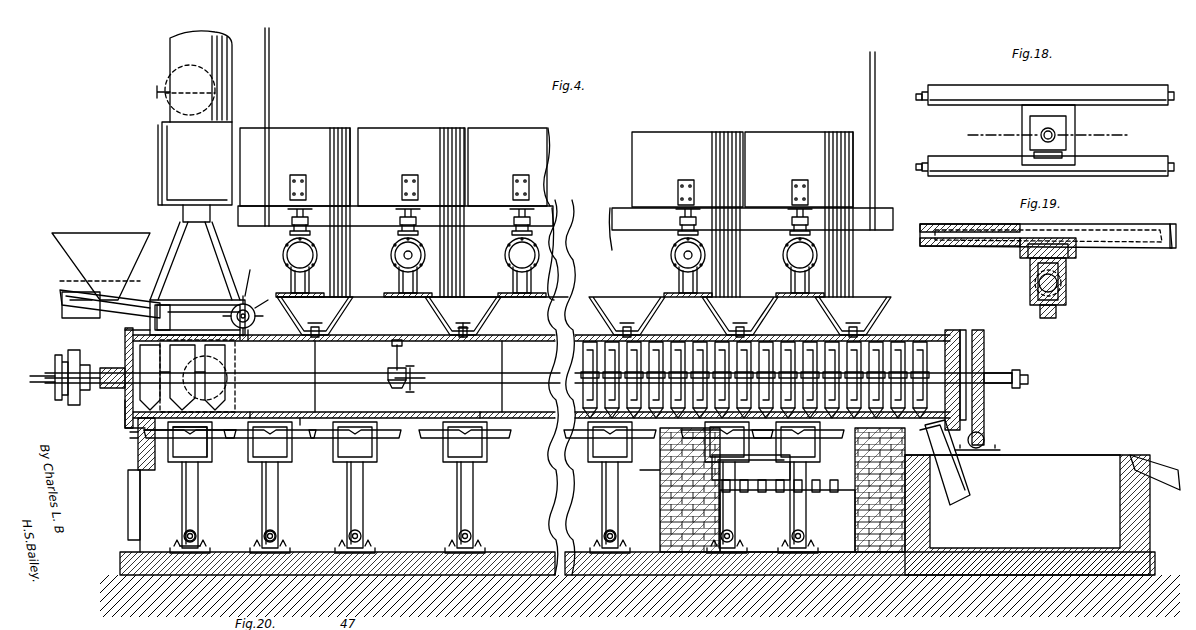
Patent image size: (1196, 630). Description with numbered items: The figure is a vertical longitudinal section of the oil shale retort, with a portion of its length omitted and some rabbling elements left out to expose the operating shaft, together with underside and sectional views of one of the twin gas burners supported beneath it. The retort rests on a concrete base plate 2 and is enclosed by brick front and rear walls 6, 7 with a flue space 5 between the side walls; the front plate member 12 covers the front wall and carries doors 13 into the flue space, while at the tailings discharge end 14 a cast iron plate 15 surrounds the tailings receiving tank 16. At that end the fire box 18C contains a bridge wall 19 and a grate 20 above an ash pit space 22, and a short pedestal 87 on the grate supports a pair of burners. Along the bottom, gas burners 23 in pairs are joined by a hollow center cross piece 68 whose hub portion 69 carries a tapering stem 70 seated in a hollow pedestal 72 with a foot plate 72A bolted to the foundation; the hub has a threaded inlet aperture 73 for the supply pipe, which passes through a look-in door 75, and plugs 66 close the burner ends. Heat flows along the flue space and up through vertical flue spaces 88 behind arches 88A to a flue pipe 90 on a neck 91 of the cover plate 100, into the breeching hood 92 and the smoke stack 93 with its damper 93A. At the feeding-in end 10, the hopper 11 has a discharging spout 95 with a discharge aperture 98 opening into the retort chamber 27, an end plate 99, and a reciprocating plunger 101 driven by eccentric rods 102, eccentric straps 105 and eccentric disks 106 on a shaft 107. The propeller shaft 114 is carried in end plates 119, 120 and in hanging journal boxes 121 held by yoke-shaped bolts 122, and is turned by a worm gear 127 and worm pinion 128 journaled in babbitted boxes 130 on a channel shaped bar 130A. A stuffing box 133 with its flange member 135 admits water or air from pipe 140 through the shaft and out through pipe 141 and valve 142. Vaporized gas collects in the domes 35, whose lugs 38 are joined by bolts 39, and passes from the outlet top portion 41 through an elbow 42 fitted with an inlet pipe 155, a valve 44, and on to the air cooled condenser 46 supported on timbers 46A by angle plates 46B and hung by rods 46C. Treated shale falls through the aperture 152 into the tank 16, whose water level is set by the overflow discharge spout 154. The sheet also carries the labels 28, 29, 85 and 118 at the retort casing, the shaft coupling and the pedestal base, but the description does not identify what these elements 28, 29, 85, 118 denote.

In FIG. 4, the foundation or base plate 2 is at (498, 560).
In FIG. 4, the flue space 5 is at (311, 458).
In FIG. 4, the front wall 6 is at (128, 434).
In FIG. 4, the rear wall 7 is at (855, 536).
In FIG. 18, the rear wall 7 is at (1040, 138).
In FIG. 4, the oil shale feeding-in end 10 is at (109, 336).
In FIG. 4, the oil shale receiving hopper 11 is at (101, 266).
In FIG. 4, the front plate member 12 is at (138, 462).
In FIG. 4, the doors 13 is at (128, 492).
In FIG. 4, the tailings discharge end 14 is at (766, 362).
In FIG. 4, the cast iron plate 15 is at (944, 334).
In FIG. 4, the tailings receiving tank 16 is at (1032, 500).
In FIG. 4, the fire box 18C is at (753, 478).
In FIG. 18, the bridge wall 19 is at (1049, 136).
In FIG. 4, the grate 20 is at (740, 520).
In FIG. 4, the ash pit space 22 is at (787, 521).
In FIG. 4, the gas burners 23 is at (208, 438).
In FIG. 18, the gas burners 23 is at (1102, 92).
In FIG. 19, the gas burners 23 is at (1104, 250).
In FIG. 4, the shale treating retort chamber 27 is at (470, 406).
In FIG. 4, the compartment 28 is at (278, 416).
In FIG. 4, the partition 29 is at (399, 376).
In FIG. 4, the vaporized gas domes 35 is at (584, 317).
In FIG. 4, the lugs 38 is at (627, 330).
In FIG. 4, the bolts 39 is at (468, 330).
In FIG. 4, the flanged outlet top portion 41 is at (386, 296).
In FIG. 4, the elbow 42 is at (520, 280).
In FIG. 4, the valve 44 is at (418, 226).
In FIG. 4, the air cooled condenser 46 is at (392, 126).
In FIG. 4, the timbers 46A is at (615, 214).
In FIG. 4, the angle plates 46B is at (400, 192).
In FIG. 4, the rods 46C is at (268, 82).
In FIG. 18, the plugs 66 is at (916, 98).
In FIG. 19, the plugs 66 is at (1176, 248).
In FIG. 18, the center cross piece 68 is at (1022, 122).
In FIG. 19, the center cross piece 68 is at (1020, 250).
In FIG. 18, the depending hollow hub portion 69 is at (1070, 128).
In FIG. 19, the depending hollow hub portion 69 is at (1030, 283).
In FIG. 19, the tapering stem 70 is at (1042, 318).
In FIG. 4, the hollow pedestal 72 is at (198, 490).
In FIG. 4, the foot plate 72A is at (245, 544).
In FIG. 19, the threaded inlet aperture 73 is at (1060, 284).
In FIG. 4, the look-in door 75 is at (212, 456).
In FIG. 4, the pivot 85 is at (183, 534).
In FIG. 4, the short pedestal 87 is at (712, 500).
In FIG. 4, the vertical flue spaces 88 is at (238, 342).
In FIG. 4, the arches 88A is at (214, 384).
In FIG. 4, the flue pipe 90 is at (195, 261).
In FIG. 4, the necks 91 is at (188, 300).
In FIG. 4, the smoke collecting breeching hood 92 is at (195, 172).
In FIG. 4, the smoke stack 93 is at (170, 60).
In FIG. 4, the damper 93A is at (165, 96).
In FIG. 4, the discharging spout 95 is at (138, 300).
In FIG. 4, the discharge aperture 98 is at (125, 342).
In FIG. 4, the end plate 99 is at (172, 317).
In FIG. 4, the cover plate 100 is at (245, 336).
In FIG. 4, the reciprocating plunger 101 is at (70, 312).
In FIG. 4, the eccentric rods 102 is at (200, 300).
In FIG. 4, the eccentric straps 105 is at (248, 290).
In FIG. 4, the eccentric disks 106 is at (230, 316).
In FIG. 4, the shaft 107 is at (260, 312).
In FIG. 4, the propeller shaft 114 is at (336, 372).
In FIG. 4, the coupling 118 is at (418, 372).
In FIG. 4, the front end plate 119 is at (128, 400).
In FIG. 4, the rear end plate 120 is at (940, 372).
In FIG. 4, the hanging journal boxes 121 is at (400, 358).
In FIG. 4, the yoke-shaped bolts 122 is at (400, 390).
In FIG. 4, the worm gear 127 is at (984, 360).
In FIG. 4, the worm pinion 128 is at (984, 436).
In FIG. 4, the babbitted boxes 130 is at (990, 448).
In FIG. 4, the channel shaped bar 130A is at (978, 456).
In FIG. 4, the stuffing box 133 is at (96, 388).
In FIG. 4, the flange member 135 is at (56, 360).
In FIG. 4, the pipe 140 is at (58, 380).
In FIG. 4, the pipe 141 is at (1008, 388).
In FIG. 4, the valve 142 is at (1024, 386).
In FIG. 4, the aperture 152 is at (940, 416).
In FIG. 4, the overflow discharge spout 154 is at (1152, 458).
In FIG. 4, the inlet pipe 155 is at (392, 248).